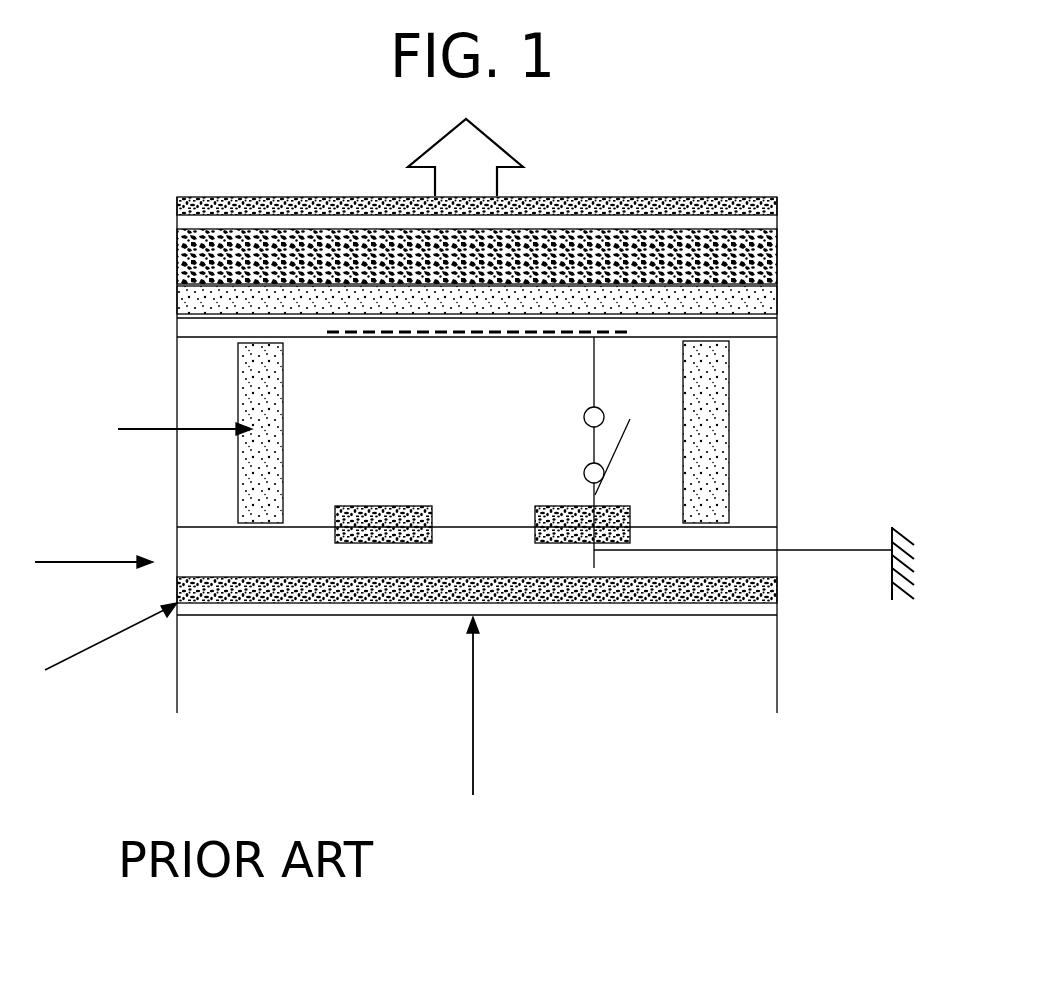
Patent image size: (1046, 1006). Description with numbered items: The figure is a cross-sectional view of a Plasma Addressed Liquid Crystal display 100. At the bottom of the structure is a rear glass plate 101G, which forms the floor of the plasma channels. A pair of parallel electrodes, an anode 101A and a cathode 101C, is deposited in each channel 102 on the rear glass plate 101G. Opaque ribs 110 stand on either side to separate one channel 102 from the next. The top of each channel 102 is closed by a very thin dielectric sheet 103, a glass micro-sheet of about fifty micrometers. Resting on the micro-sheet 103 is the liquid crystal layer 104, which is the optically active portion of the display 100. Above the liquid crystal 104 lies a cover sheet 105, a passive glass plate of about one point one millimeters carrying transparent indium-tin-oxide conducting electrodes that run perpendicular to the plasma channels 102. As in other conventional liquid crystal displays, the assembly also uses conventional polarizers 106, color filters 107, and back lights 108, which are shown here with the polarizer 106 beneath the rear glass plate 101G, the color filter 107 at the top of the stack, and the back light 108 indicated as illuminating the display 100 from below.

The display 100 is at (157, 120).
The color filters 107 is at (176, 200).
The cover sheet 105 is at (778, 248).
The liquid crystal layer 104 is at (176, 300).
The dielectric sheet 103 is at (763, 329).
The channel 102 is at (368, 443).
The opaque ribs 110 is at (250, 467).
The rear glass plate 101G is at (176, 527).
The cathode 101C is at (388, 543).
The anode 101A is at (552, 543).
The polarizers 106 is at (176, 592).
The back lights 108 is at (475, 725).